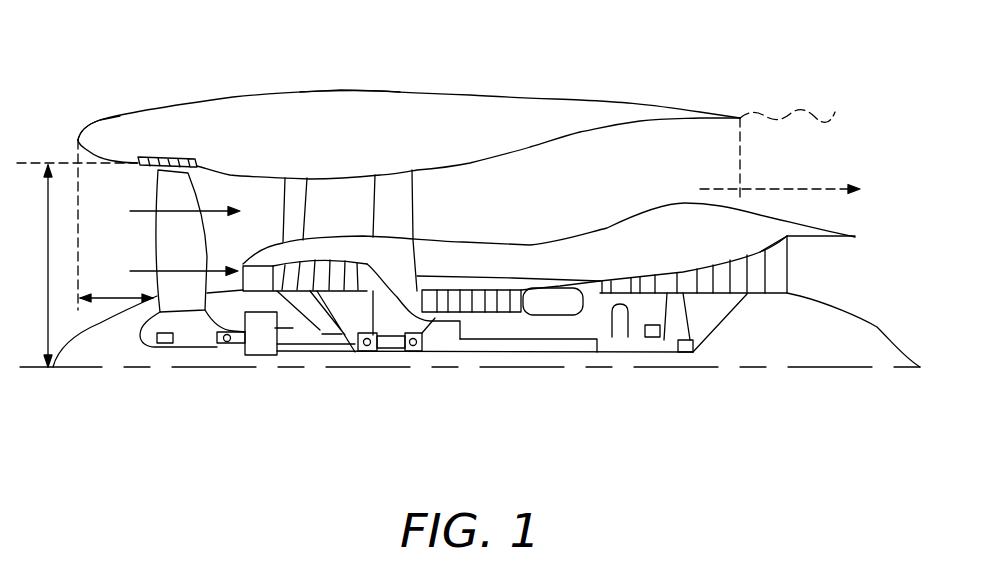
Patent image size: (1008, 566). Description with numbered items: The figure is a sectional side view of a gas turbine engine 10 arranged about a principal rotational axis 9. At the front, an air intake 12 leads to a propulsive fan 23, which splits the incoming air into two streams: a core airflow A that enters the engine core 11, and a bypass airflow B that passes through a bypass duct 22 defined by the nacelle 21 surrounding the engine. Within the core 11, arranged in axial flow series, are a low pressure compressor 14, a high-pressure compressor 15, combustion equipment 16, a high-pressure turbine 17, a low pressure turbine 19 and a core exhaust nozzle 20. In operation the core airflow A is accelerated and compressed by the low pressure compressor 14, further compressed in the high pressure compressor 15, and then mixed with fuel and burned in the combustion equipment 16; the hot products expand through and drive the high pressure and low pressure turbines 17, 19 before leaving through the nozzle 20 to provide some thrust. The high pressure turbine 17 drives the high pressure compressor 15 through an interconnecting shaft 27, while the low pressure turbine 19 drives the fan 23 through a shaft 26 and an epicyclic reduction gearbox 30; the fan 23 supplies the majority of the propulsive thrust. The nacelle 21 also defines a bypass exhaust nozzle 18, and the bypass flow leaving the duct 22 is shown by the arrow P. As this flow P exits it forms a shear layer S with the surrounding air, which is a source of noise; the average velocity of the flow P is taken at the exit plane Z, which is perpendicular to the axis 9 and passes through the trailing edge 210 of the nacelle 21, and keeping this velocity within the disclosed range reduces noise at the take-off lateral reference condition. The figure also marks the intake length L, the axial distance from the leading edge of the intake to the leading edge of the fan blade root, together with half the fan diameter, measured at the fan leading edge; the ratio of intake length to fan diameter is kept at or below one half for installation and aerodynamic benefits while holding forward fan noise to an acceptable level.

The principal rotational axis 9 is at (793, 368).
The gas turbine engine 10 is at (155, 108).
The core 11 is at (523, 262).
The air intake 12 is at (120, 117).
The low pressure compressor 14 is at (330, 267).
The high-pressure compressor 15 is at (478, 293).
The combustion equipment 16 is at (555, 300).
The high-pressure turbine 17 is at (617, 280).
The bypass exhaust nozzle 18 is at (790, 142).
The low pressure turbine 19 is at (757, 252).
The core exhaust nozzle 20 is at (813, 268).
The nacelle 21 is at (390, 106).
The bypass duct 22 is at (684, 176).
The propulsive fan 23 is at (162, 235).
The shaft 26 is at (472, 352).
The interconnecting shaft 27 is at (513, 340).
The epicyclic gearbox 30 is at (258, 347).
The trailing edge of the nacelle 210 is at (745, 110).
The shear layer S is at (798, 110).
The exit plane Z is at (740, 165).
The flow exiting the bypass duct P is at (786, 180).
The core airflow A is at (177, 263).
The bypass airflow B is at (175, 210).
The intake length L is at (116, 288).